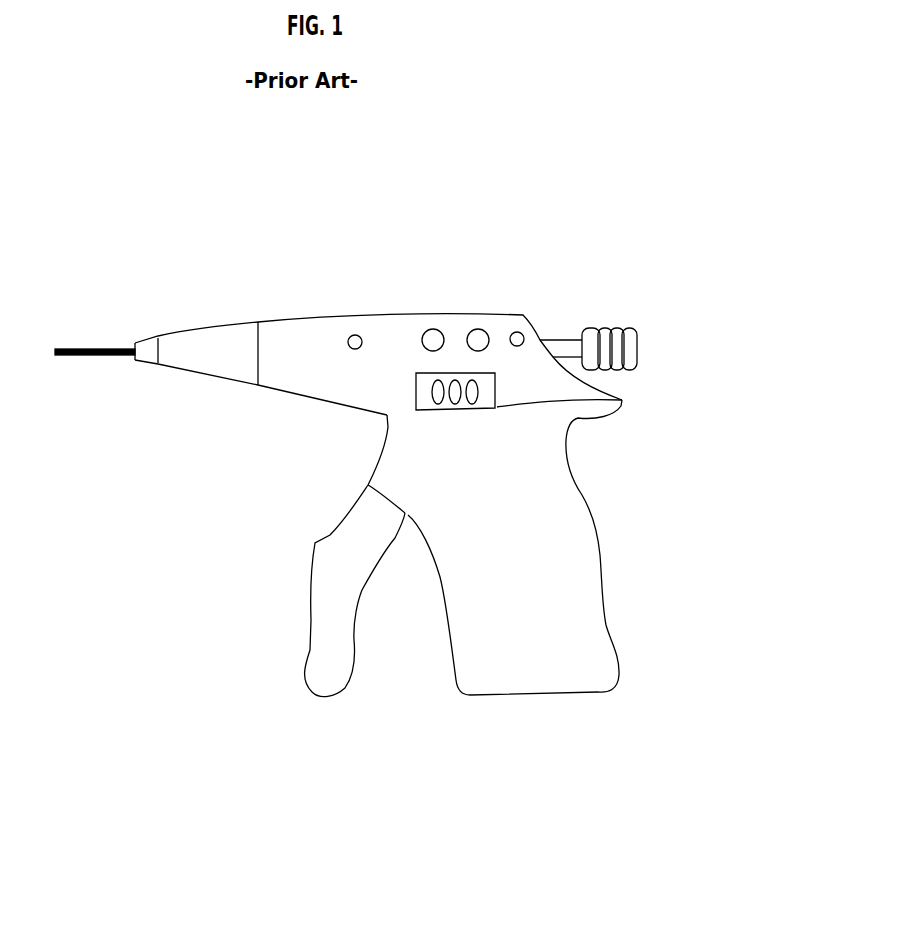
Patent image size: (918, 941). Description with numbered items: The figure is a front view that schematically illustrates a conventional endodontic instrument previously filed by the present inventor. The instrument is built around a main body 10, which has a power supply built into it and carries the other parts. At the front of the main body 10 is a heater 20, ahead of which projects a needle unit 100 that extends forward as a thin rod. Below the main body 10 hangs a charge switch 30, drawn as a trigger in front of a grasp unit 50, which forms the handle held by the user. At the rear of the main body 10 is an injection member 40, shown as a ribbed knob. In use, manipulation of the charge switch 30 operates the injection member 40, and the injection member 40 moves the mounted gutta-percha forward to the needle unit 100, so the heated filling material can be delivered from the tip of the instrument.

The main body 10 is at (323, 338).
The heater 20 is at (195, 345).
The charge switch 30 is at (338, 605).
The injection member 40 is at (568, 350).
The grasp unit 50 is at (533, 643).
The needle unit 100 is at (118, 350).